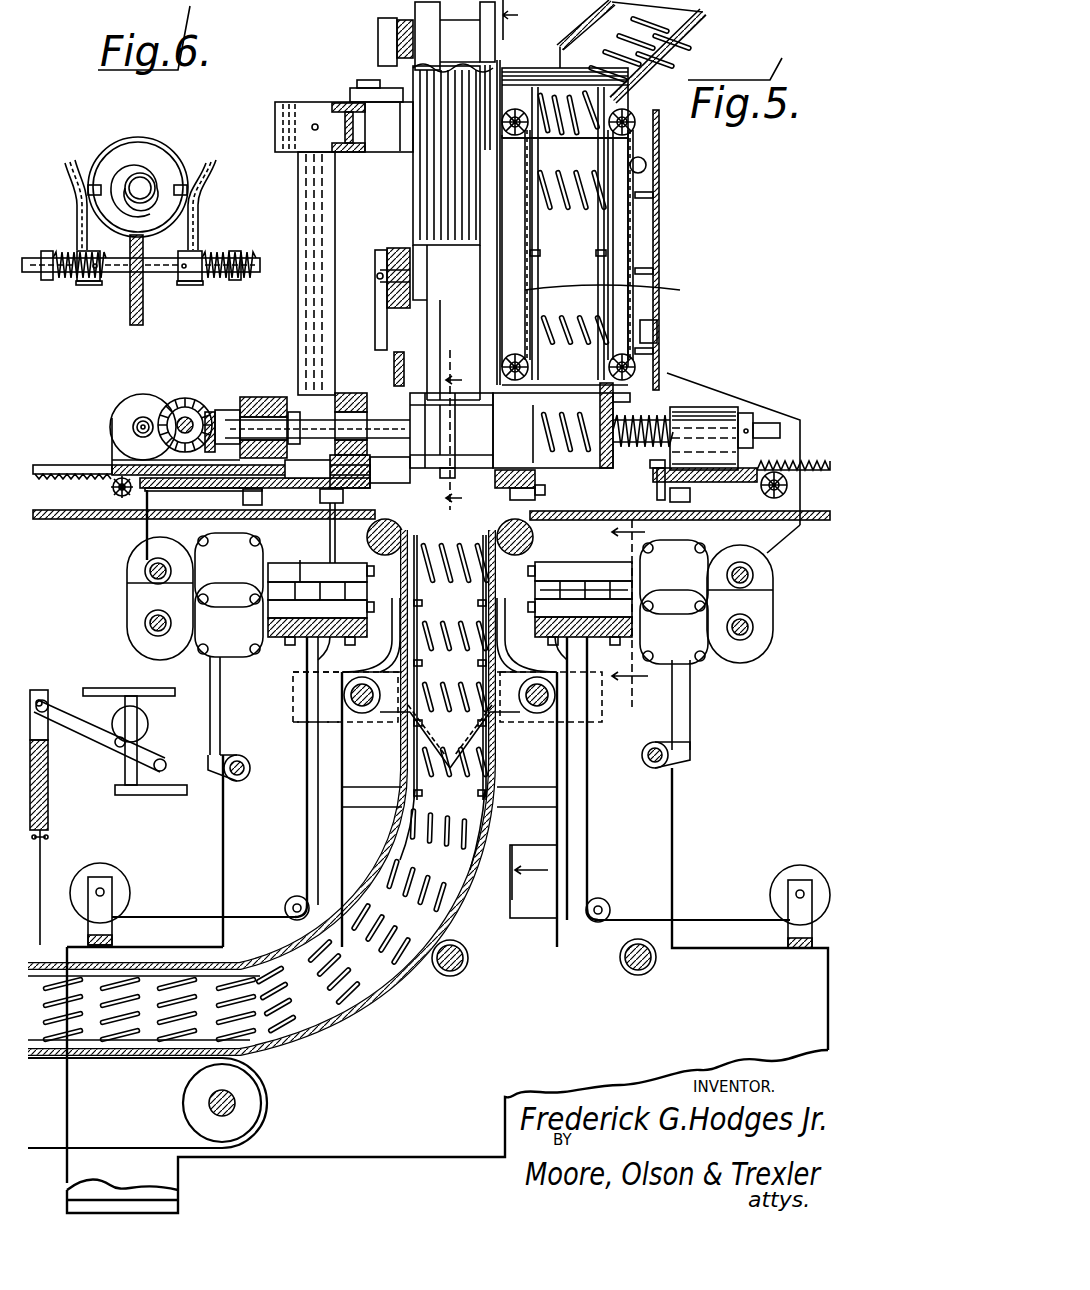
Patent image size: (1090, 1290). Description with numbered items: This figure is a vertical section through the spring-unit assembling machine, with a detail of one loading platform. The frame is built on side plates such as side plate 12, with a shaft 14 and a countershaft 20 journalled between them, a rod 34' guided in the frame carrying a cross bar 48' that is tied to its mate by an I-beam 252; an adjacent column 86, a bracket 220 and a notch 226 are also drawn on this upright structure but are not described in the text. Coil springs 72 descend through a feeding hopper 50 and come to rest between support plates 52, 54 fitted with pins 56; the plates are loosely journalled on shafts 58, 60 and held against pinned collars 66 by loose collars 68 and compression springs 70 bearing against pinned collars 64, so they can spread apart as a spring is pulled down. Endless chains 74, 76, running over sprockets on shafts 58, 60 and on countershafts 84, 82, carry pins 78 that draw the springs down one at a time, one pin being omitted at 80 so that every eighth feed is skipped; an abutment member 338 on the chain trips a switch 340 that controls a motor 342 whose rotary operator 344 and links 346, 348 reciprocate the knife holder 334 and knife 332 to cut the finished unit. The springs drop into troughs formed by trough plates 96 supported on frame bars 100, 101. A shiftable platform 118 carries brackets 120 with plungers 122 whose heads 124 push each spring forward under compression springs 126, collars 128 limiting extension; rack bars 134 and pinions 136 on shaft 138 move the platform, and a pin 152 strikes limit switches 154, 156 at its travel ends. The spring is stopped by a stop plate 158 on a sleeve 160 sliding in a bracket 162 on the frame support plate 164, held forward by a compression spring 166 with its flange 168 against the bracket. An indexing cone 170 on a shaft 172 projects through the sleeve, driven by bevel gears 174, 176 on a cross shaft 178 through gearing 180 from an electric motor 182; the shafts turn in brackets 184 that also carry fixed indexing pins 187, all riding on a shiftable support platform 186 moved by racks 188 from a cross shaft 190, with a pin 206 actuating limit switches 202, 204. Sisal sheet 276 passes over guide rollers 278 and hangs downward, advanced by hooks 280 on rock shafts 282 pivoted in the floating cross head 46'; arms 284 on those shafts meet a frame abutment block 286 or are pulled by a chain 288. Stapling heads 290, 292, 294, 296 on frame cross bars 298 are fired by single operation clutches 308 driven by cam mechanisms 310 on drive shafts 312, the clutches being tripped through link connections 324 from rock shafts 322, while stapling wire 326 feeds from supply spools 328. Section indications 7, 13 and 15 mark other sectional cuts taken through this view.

In FIG. 5, the section line 7 is at (526, 450).
In FIG. 5, the side plate 12 is at (222, 803).
In FIG. 5, the section line 13 is at (641, 613).
In FIG. 5, the shaft 14 is at (465, 968).
In FIG. 5, the section line 15 is at (468, 430).
In FIG. 5, the countershaft 20 is at (632, 977).
In FIG. 5, the rod 34' is at (338, 273).
In FIG. 5, the floating cross head 46' is at (289, 697).
In FIG. 5, the cross bar 48' is at (344, 109).
In FIG. 5, the feeding hopper 50 is at (700, 22).
In FIG. 6, the support plate 52 is at (78, 205).
In FIG. 6, the support plate 54 is at (200, 205).
In FIG. 5, the support plate 54 is at (560, 70).
In FIG. 6, the pin 56 is at (92, 172).
In FIG. 5, the pin 56 is at (500, 100).
In FIG. 5, the shaft 58 is at (540, 160).
In FIG. 6, the shaft 60 is at (120, 273).
In FIG. 5, the shaft 60 is at (630, 132).
In FIG. 6, the collar 64 is at (46, 282).
In FIG. 6, the collar 66 is at (92, 282).
In FIG. 6, the collar 68 is at (80, 284).
In FIG. 6, the compression spring 70 is at (65, 256).
In FIG. 6, the coil spring 72 is at (143, 138).
In FIG. 5, the coil spring 72 is at (665, 52).
In FIG. 5, the endless chain 74 is at (532, 264).
In FIG. 5, the endless chain 76 is at (660, 212).
In FIG. 5, the pin 78 is at (650, 194).
In FIG. 5, the omitted pin position 80 is at (611, 290).
In FIG. 5, the countershaft 82 is at (700, 385).
In FIG. 5, the countershaft 84 is at (553, 430).
In FIG. 5, the column 86 is at (460, 245).
In FIG. 5, the trough plate 96 is at (445, 472).
In FIG. 5, the frame bar 100 is at (535, 478).
In FIG. 5, the frame bar 101 is at (416, 362).
In FIG. 5, the shiftable platform 118 is at (700, 484).
In FIG. 5, the bracket 120 is at (715, 405).
In FIG. 5, the plunger 122 is at (765, 423).
In FIG. 5, the plunger head 124 is at (600, 392).
In FIG. 5, the compression spring 126 is at (640, 448).
In FIG. 5, the collar 128 is at (750, 413).
In FIG. 5, the rack bar 134 is at (810, 460).
In FIG. 5, the pinion 136 is at (795, 540).
In FIG. 5, the shaft 138 is at (773, 498).
In FIG. 5, the pin 152 is at (657, 495).
In FIG. 5, the limit switch 154 is at (535, 495).
In FIG. 5, the limit switch 156 is at (682, 503).
In FIG. 5, the stop plate 158 is at (451, 430).
In FIG. 5, the sleeve 160 is at (370, 391).
In FIG. 5, the bracket 162 is at (394, 362).
In FIG. 5, the frame support plate 164 is at (170, 489).
In FIG. 5, the compression spring 166 is at (405, 475).
In FIG. 5, the flange 168 is at (295, 410).
In FIG. 5, the indexing cone 170 is at (432, 426).
In FIG. 5, the shaft 172 is at (307, 470).
In FIG. 5, the bevel gear 174 is at (210, 400).
In FIG. 5, the bevel gear 176 is at (205, 420).
In FIG. 5, the cross shaft 178 is at (178, 420).
In FIG. 5, the gearing 180 is at (132, 427).
In FIG. 5, the electric motor 182 is at (140, 394).
In FIG. 5, the bracket 184 is at (300, 418).
In FIG. 5, the shiftable support platform 186 is at (146, 516).
In FIG. 5, the fixed indexing pin 187 is at (454, 430).
In FIG. 5, the rack 188 is at (50, 463).
In FIG. 5, the cross shaft 190 is at (111, 487).
In FIG. 5, the limit switch 202 is at (200, 492).
In FIG. 5, the limit switch 204 is at (334, 533).
In FIG. 5, the pin 206 is at (262, 498).
In FIG. 5, the bracket 220 is at (392, 248).
In FIG. 5, the notch 226 is at (414, 302).
In FIG. 5, the I-beam 252 is at (352, 152).
In FIG. 5, the sheet sisal material 276 is at (575, 524).
In FIG. 5, the guide roller 278 is at (405, 537).
In FIG. 5, the hook 280 is at (390, 640).
In FIG. 5, the rock shaft 282 is at (365, 715).
In FIG. 5, the arm 284 is at (412, 724).
In FIG. 5, the frame abutment block 286 is at (400, 800).
In FIG. 5, the chain 288 is at (490, 815).
In FIG. 5, the stapling head 290 is at (608, 612).
In FIG. 5, the stapling head 292 is at (580, 562).
In FIG. 5, the stapling head 294 is at (290, 645).
In FIG. 5, the stapling head 296 is at (300, 562).
In FIG. 5, the frame cross bar 298 is at (318, 660).
In FIG. 5, the single operation clutch 308 is at (230, 575).
In FIG. 5, the cam mechanism 310 is at (130, 575).
In FIG. 5, the drive shaft 312 is at (148, 620).
In FIG. 5, the rock shaft 322 is at (245, 778).
In FIG. 5, the link connection 324 is at (222, 741).
In FIG. 5, the stapling wire 326 is at (160, 917).
In FIG. 5, the supply spool 328 is at (105, 875).
In FIG. 5, the knife 332 is at (50, 840).
In FIG. 5, the knife holder 334 is at (48, 786).
In FIG. 5, the abutment member 338 is at (648, 165).
In FIG. 5, the switch 340 is at (657, 325).
In FIG. 5, the motor 342 is at (100, 688).
In FIG. 5, the rotary operator 344 is at (140, 724).
In FIG. 5, the link 346 is at (100, 736).
In FIG. 5, the link 348 is at (45, 690).